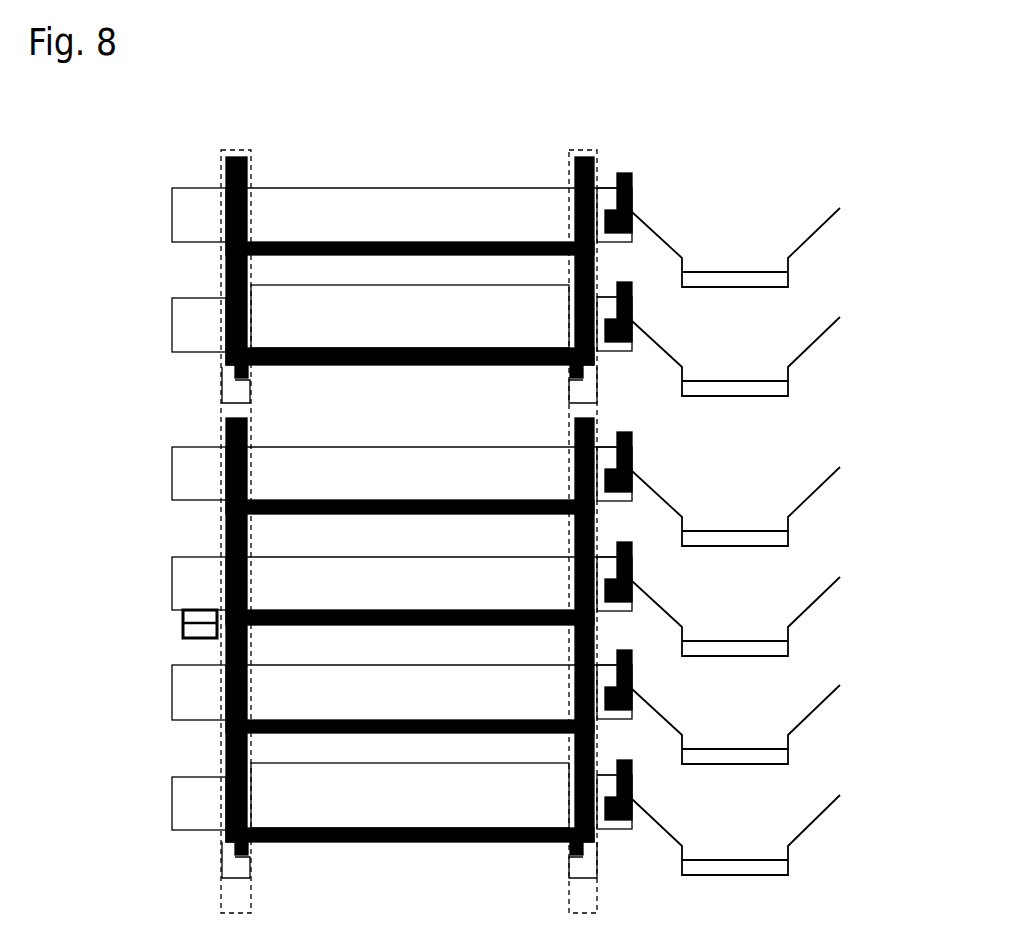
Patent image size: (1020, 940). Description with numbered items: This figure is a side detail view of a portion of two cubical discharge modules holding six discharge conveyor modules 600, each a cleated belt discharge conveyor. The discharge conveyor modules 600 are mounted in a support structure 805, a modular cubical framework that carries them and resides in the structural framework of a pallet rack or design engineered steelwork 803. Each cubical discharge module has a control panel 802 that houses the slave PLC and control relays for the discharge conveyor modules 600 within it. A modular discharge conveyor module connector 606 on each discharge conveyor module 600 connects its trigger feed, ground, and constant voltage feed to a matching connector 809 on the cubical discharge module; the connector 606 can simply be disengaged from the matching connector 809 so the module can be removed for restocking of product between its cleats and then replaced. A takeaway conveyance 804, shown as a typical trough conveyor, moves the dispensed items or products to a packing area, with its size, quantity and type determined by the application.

The discharge conveyor module 600 is at (338, 207).
The control panel 802 is at (379, 347).
The pallet rack or design engineered steelwork 803 is at (220, 382).
The takeaway conveyance 804 is at (773, 403).
The support structure 805 is at (225, 737).
The modular discharge conveyor module connector 606 is at (195, 618).
The matching connector 809 is at (183, 628).